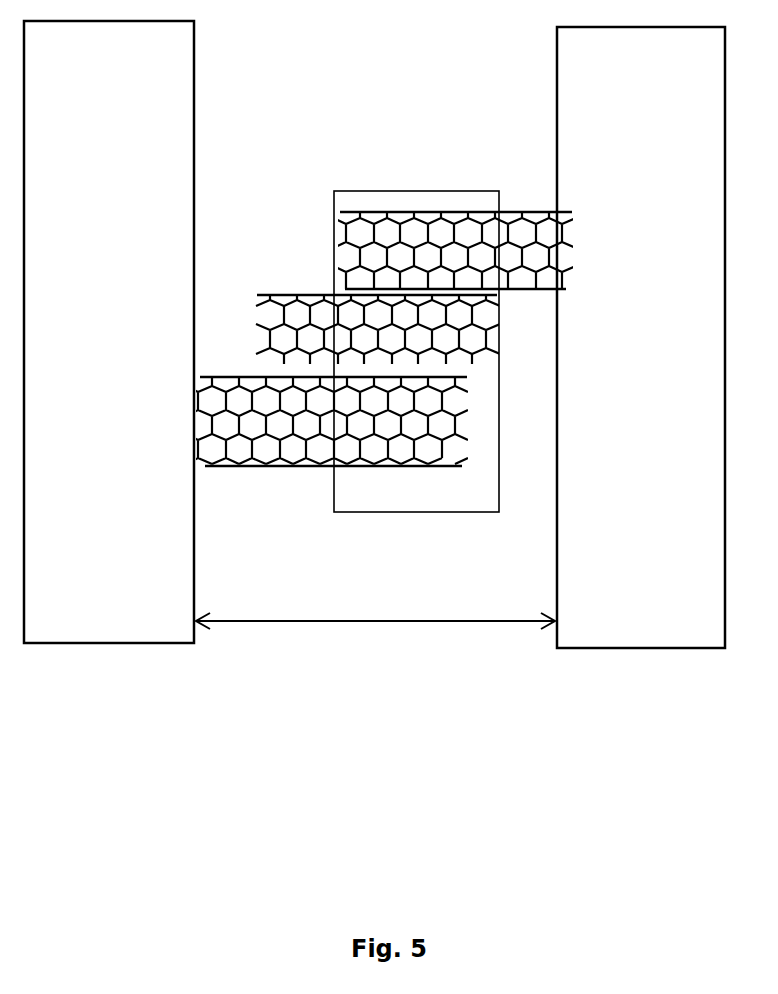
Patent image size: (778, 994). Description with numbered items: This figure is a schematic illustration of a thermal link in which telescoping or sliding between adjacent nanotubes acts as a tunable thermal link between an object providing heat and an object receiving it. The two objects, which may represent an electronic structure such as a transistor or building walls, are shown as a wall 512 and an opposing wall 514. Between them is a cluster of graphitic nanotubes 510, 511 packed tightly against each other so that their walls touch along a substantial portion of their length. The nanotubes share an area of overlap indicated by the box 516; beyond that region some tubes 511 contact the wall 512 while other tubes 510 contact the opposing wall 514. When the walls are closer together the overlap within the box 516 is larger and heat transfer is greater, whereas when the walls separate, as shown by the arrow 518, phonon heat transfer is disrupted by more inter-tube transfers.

The nanotube 510 is at (538, 203).
The nanotube 511 is at (246, 468).
The wall 512 is at (109, 332).
The opposing wall 514 is at (641, 337).
The box indicating area of overlap 516 is at (462, 190).
The arrow 518 is at (289, 622).